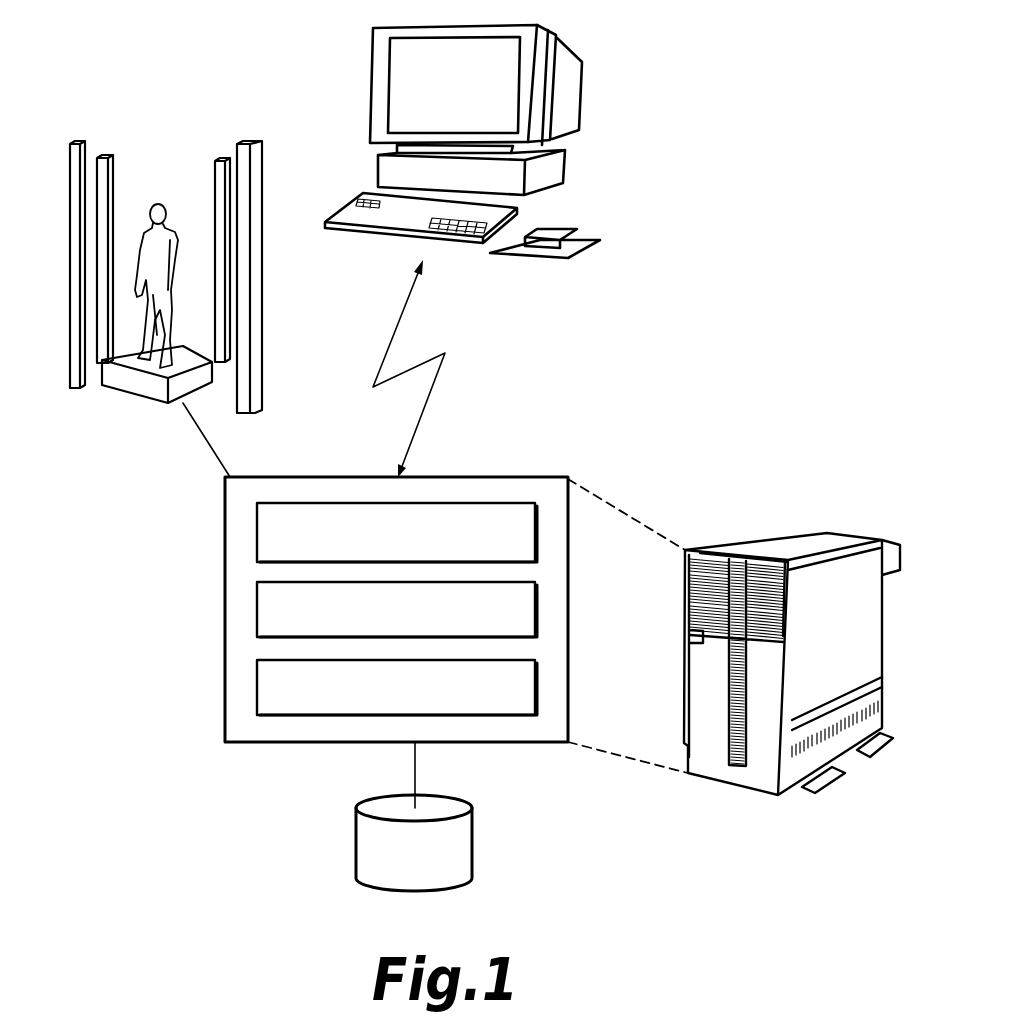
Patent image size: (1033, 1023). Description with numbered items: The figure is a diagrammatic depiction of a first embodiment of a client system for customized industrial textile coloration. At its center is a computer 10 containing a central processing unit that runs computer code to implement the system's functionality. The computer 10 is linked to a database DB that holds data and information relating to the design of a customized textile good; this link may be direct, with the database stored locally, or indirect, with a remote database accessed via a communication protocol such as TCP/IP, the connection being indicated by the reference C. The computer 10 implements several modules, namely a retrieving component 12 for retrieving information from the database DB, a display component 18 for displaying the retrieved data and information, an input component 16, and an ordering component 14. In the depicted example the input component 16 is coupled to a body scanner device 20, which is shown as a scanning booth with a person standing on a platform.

The computer 10 is at (790, 546).
The retrieving component 12 is at (257, 686).
The ordering component 14 is at (257, 606).
The input component 16 is at (500, 503).
The display component 18 is at (590, 100).
The body scanner device 20 is at (265, 323).
The communication link C is at (637, 350).
The database DB is at (463, 840).